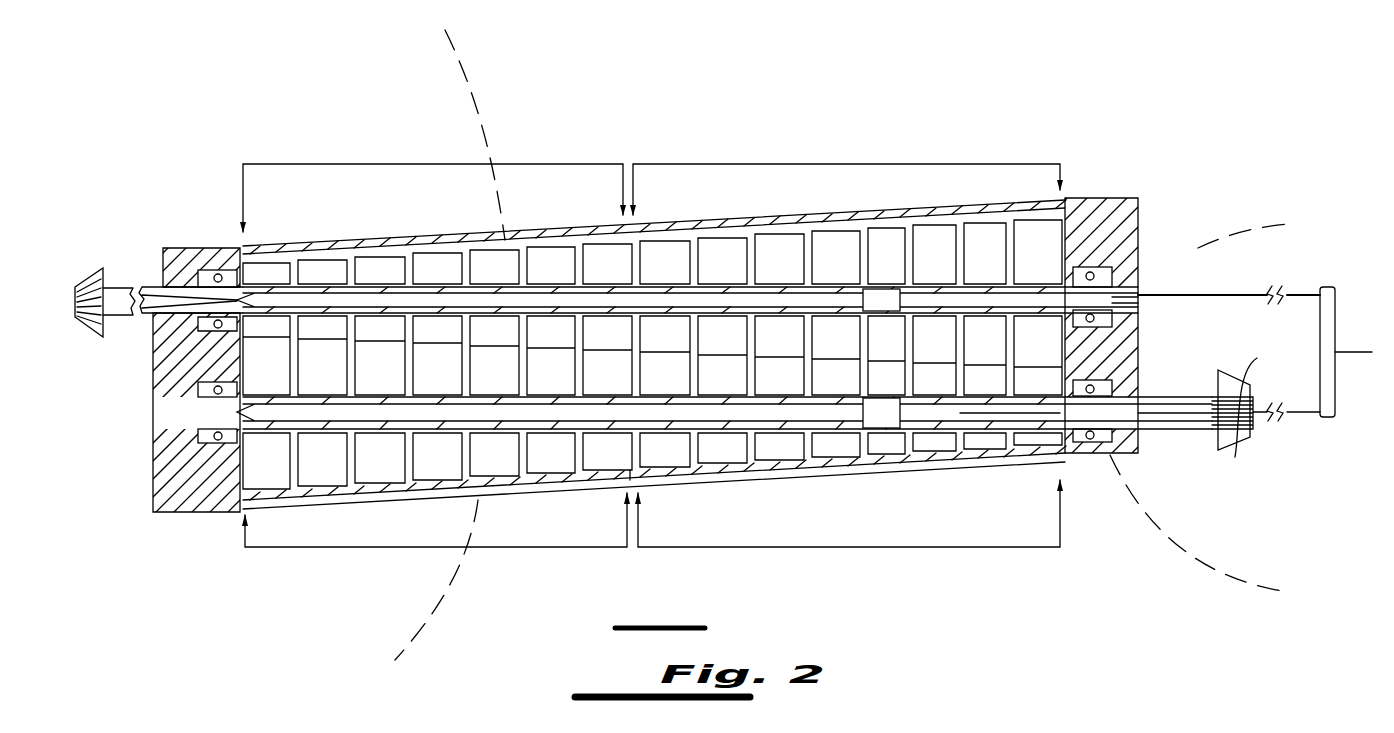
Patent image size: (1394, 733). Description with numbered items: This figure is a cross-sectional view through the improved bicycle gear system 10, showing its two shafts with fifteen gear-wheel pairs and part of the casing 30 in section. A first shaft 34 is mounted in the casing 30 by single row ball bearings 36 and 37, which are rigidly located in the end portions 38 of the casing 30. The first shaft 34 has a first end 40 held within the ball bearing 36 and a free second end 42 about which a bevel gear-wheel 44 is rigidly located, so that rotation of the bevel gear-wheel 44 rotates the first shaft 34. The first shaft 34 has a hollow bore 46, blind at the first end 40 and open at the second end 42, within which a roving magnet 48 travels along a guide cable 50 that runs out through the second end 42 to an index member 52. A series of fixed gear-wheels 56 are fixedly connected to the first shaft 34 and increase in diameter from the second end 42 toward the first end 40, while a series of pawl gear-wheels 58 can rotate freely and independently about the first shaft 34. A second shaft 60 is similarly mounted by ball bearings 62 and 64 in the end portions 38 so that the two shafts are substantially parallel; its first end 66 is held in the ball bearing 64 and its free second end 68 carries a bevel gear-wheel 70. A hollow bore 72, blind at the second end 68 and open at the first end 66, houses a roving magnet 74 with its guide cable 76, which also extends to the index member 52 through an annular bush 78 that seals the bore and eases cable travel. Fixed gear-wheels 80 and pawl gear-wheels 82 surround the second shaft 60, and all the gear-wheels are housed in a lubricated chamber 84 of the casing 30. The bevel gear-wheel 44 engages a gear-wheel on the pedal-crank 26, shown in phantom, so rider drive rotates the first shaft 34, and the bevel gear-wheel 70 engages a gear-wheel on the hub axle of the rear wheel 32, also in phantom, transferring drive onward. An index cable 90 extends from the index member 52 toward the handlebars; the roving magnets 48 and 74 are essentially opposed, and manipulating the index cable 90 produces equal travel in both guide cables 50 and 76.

The gear system 10 is at (667, 133).
The pedal-crank 26 is at (1262, 225).
The casing 30 is at (789, 207).
The rear wheel 32 is at (480, 90).
The first shaft 34 is at (1160, 434).
The ball bearing 36 is at (208, 445).
The ball bearing 37 is at (1110, 452).
The end portions 38 is at (1105, 215).
The first end 40 is at (207, 418).
The second end 42 is at (1210, 432).
The bevel gear-wheel 44 is at (1243, 448).
The hollow bore 46 is at (540, 410).
The roving magnet 48 is at (885, 422).
The guide cable 50 is at (995, 422).
The index member 52 is at (1325, 420).
The fixed gear-wheels 56 is at (900, 547).
The pawl gear-wheels 58 is at (515, 547).
The second shaft 60 is at (185, 280).
The ball bearing 62 is at (218, 270).
The ball bearing 64 is at (1110, 280).
The first end 66 is at (1112, 272).
The second end 68 is at (120, 318).
The bevel gear-wheel 70 is at (95, 285).
The hollow bore 72 is at (323, 298).
The roving magnet 74 is at (882, 300).
The guide cable 76 is at (1148, 297).
The annular bush 78 is at (1140, 282).
The fixed gear-wheels 80 is at (400, 164).
The pawl gear-wheels 82 is at (945, 164).
The chamber 84 is at (642, 473).
The index cable 90 is at (1355, 352).